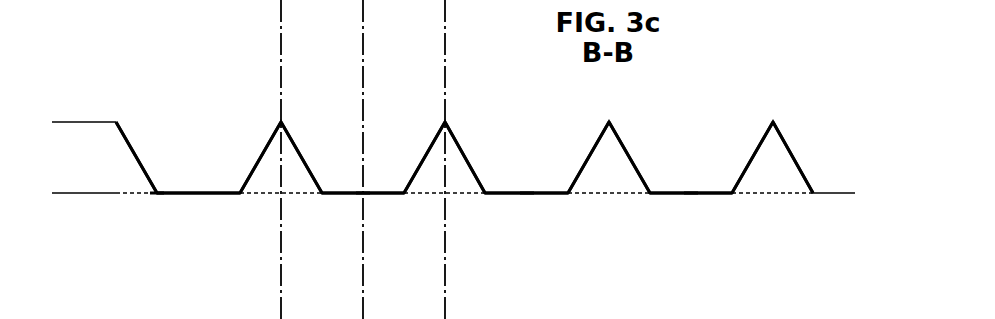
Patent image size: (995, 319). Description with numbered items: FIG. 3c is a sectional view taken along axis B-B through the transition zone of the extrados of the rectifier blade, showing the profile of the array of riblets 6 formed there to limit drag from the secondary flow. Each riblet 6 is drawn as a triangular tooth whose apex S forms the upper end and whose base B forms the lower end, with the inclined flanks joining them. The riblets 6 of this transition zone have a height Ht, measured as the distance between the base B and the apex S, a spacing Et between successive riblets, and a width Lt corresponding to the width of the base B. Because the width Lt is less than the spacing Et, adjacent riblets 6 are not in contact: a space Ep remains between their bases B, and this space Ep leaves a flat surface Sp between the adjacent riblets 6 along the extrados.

The riblet 6 is at (797, 157).
The apex S is at (118, 121).
The flat surface Sp is at (199, 194).
The base B is at (298, 194).
The space Ep is at (200, 184).
The height Ht is at (63, 124).
The spacing Et is at (117, 200).
The width Lt is at (568, 200).